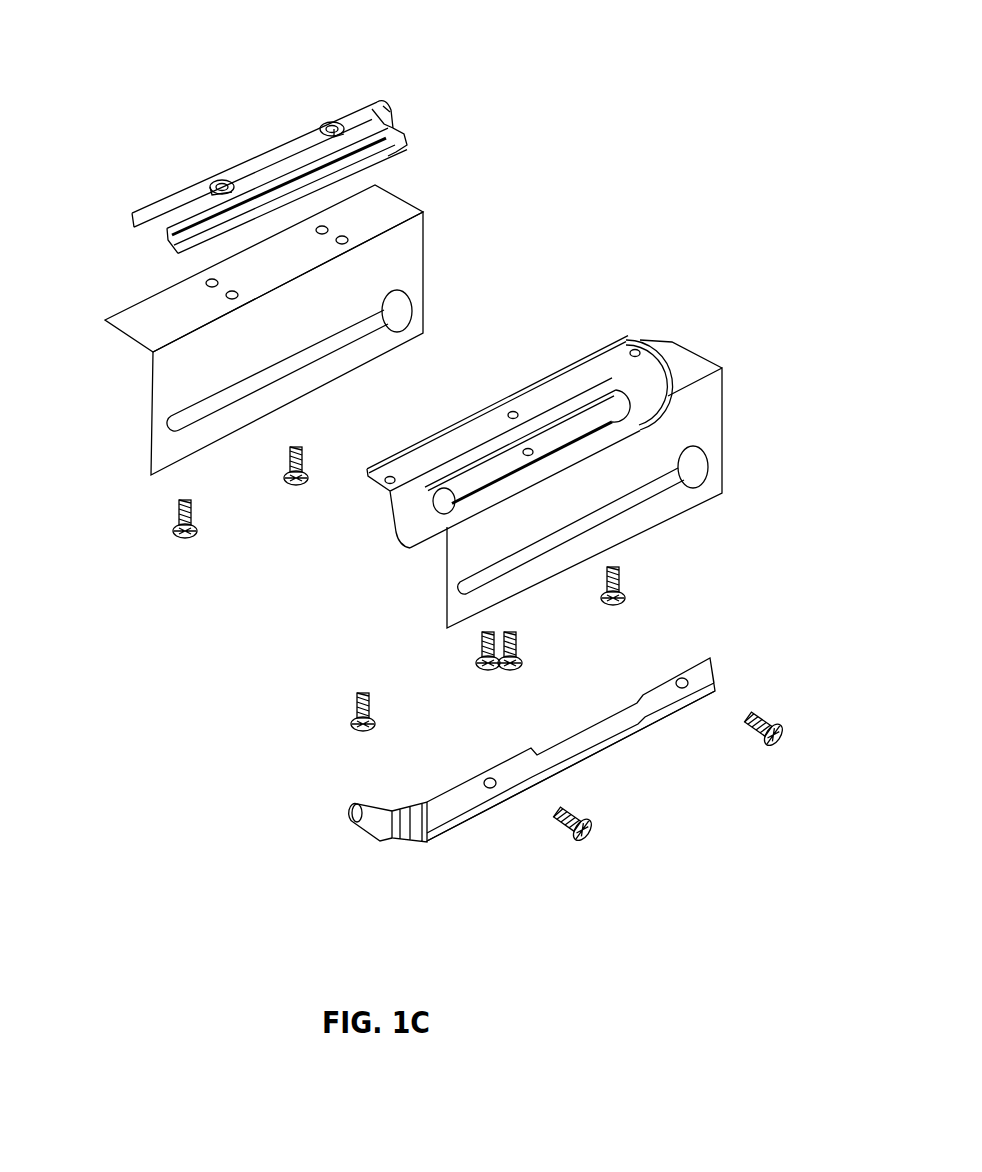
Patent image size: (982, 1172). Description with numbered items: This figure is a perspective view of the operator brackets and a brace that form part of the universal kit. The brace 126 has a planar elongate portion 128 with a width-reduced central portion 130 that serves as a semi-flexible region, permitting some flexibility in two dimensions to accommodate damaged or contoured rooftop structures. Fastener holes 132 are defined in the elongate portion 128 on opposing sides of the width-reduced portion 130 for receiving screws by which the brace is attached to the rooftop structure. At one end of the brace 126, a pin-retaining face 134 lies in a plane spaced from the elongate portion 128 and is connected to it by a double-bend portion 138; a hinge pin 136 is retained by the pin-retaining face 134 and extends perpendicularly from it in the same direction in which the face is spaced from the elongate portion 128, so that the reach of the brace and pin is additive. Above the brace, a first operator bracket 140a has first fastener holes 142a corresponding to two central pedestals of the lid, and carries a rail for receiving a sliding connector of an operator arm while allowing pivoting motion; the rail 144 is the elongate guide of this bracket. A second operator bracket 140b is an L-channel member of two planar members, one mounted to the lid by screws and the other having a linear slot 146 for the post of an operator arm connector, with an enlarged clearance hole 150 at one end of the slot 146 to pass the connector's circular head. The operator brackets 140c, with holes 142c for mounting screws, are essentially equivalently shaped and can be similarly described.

The brace 126 is at (559, 763).
The planar elongate portion 128 is at (652, 698).
The width-reduced central portion 130 is at (605, 737).
The fastener holes 132 is at (674, 672).
The pin-retaining face 134 is at (366, 834).
The hinge pin 136 is at (358, 812).
The double-bend portion 138 is at (413, 812).
The first operator bracket 140a is at (386, 116).
The second operator bracket 140b is at (407, 537).
The operator brackets 140c is at (157, 443).
The first fastener holes 142a is at (209, 167).
The holes 142c is at (306, 250).
The rail channel 144 is at (385, 152).
The linear slot 146 is at (572, 436).
The clearance hole 150 is at (447, 501).